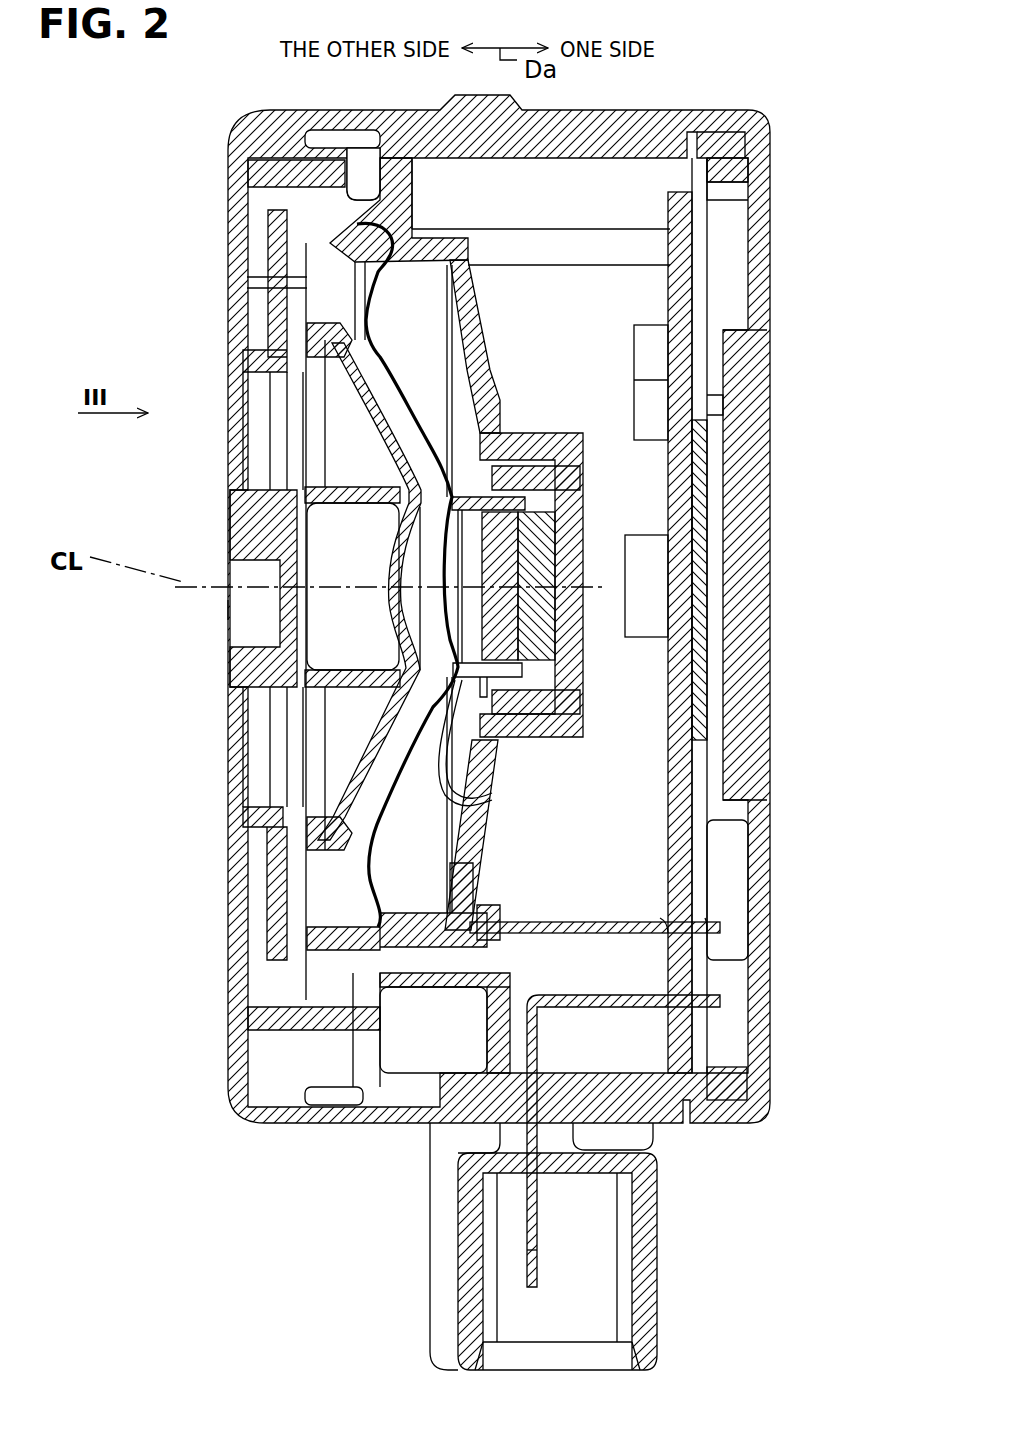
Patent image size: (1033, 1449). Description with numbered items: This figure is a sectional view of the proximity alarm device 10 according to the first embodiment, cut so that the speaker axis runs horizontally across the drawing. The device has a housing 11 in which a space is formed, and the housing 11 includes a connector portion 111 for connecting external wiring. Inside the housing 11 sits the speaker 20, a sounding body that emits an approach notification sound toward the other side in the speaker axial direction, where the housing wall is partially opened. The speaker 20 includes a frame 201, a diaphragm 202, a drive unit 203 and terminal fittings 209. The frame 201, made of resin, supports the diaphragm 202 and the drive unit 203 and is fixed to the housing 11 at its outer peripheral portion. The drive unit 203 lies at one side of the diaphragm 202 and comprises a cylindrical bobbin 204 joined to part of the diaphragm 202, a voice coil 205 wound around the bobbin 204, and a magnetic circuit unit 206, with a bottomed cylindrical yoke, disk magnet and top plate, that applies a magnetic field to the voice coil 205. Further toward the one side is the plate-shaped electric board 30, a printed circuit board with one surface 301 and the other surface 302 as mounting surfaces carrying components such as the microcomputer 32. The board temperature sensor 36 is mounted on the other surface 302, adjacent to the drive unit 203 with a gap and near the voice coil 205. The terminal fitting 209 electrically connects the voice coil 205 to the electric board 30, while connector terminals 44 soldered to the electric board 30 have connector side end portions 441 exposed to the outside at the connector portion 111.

The proximity alarm device 10 is at (705, 55).
The housing 11 is at (473, 707).
The connector portion 111 is at (473, 1283).
The speaker 20 is at (546, 717).
The frame 201 is at (405, 380).
The diaphragm 202 is at (372, 412).
The drive unit 203 is at (560, 548).
The bobbin 204 is at (575, 445).
The voice coil 205 is at (540, 475).
The magnetic circuit unit 206 is at (585, 553).
The terminal fitting 209 is at (590, 926).
The electric board 30 is at (743, 615).
The one surface 301 is at (650, 390).
The other surface 302 is at (660, 348).
The microcomputer 32 is at (712, 406).
The board temperature sensor 36 is at (655, 628).
The connector terminal 44 is at (537, 1190).
The connector side end portion 441 is at (535, 1258).